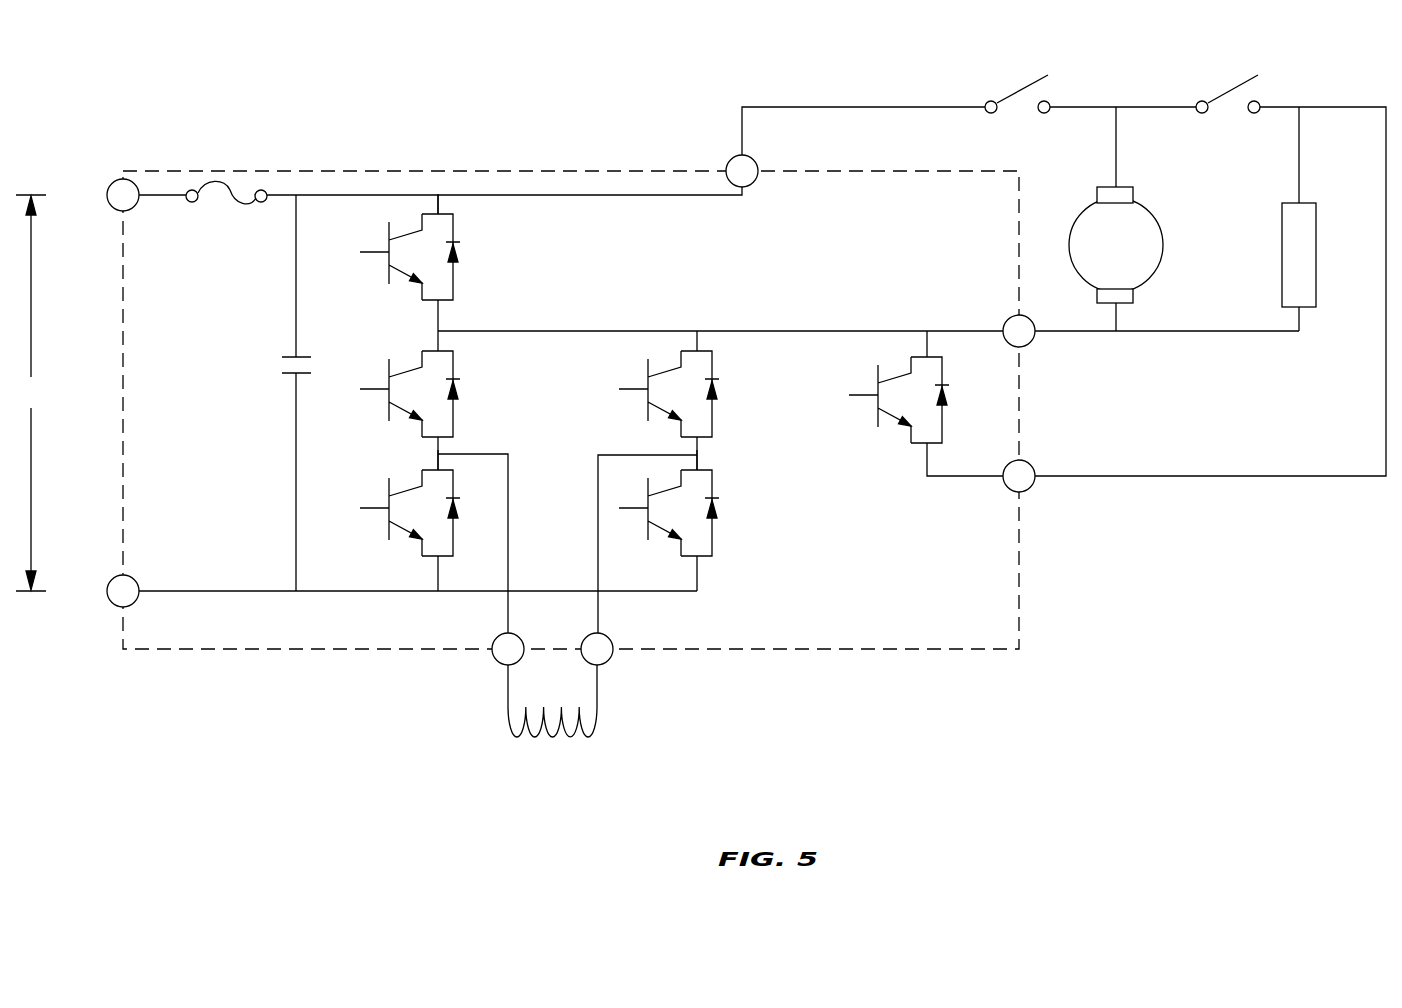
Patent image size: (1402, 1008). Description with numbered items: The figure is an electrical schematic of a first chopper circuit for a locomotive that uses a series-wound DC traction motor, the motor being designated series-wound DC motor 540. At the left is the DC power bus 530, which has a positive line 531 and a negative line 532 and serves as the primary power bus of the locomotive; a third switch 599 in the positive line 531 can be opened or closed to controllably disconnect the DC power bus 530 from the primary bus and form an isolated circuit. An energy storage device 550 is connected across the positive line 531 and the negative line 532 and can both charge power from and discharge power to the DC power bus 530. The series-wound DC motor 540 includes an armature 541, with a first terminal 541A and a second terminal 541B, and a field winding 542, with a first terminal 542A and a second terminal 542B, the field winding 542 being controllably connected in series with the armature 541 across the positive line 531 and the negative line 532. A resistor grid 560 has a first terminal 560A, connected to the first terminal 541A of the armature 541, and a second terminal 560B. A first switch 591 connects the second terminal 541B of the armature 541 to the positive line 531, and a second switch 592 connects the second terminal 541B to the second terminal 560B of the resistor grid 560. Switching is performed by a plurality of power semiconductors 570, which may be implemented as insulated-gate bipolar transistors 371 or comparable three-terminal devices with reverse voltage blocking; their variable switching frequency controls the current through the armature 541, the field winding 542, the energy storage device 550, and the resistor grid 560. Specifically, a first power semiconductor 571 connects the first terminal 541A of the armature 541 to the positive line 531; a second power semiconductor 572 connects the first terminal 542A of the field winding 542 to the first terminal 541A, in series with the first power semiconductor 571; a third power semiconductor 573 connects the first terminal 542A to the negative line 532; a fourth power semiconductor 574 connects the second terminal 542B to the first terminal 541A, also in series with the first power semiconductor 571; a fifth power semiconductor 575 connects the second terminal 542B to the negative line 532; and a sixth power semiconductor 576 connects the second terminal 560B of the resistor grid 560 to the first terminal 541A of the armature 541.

The DC power bus 530 is at (31, 393).
The positive line 531 is at (107, 196).
The negative line 532 is at (107, 596).
The third switch 599 is at (214, 182).
The energy storage device 550 is at (292, 355).
The plurality of power semiconductors 570 is at (929, 651).
The first power semiconductor 571 is at (436, 262).
The second power semiconductor 572 is at (436, 400).
The third power semiconductor 573 is at (436, 520).
The fourth power semiconductor 574 is at (695, 400).
The fifth power semiconductor 575 is at (695, 520).
The sixth power semiconductor 576 is at (925, 397).
The insulated-gate bipolar transistor 371 is at (680, 392).
The field winding 542 is at (553, 740).
The first terminal of the field winding 542A is at (496, 662).
The second terminal of the field winding 542B is at (612, 662).
The series-wound DC motor 540 is at (1064, 331).
The armature 541 is at (1144, 219).
The first terminal of the armature 541A is at (1136, 295).
The second terminal of the armature 541B is at (1136, 196).
The resistor grid 560 is at (1319, 232).
The first terminal of the resistor grid 560A is at (1301, 307).
The second terminal of the resistor grid 560B is at (1301, 203).
The first switch 591 is at (1020, 86).
The second switch 592 is at (1232, 86).